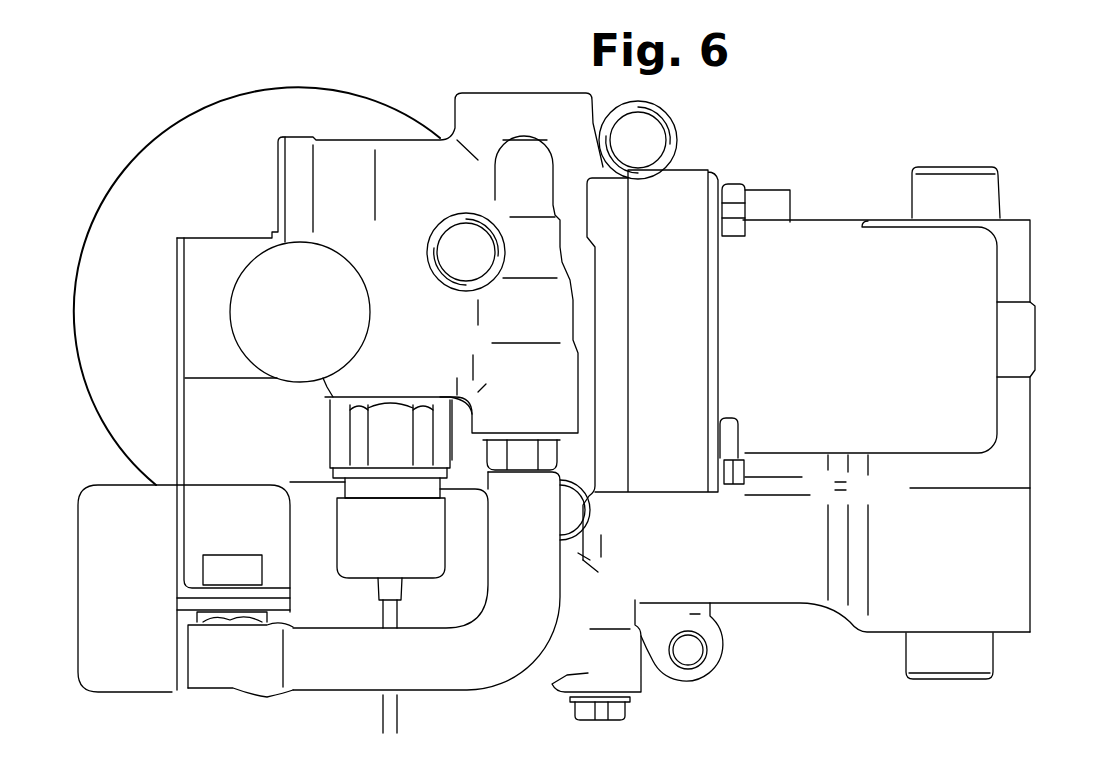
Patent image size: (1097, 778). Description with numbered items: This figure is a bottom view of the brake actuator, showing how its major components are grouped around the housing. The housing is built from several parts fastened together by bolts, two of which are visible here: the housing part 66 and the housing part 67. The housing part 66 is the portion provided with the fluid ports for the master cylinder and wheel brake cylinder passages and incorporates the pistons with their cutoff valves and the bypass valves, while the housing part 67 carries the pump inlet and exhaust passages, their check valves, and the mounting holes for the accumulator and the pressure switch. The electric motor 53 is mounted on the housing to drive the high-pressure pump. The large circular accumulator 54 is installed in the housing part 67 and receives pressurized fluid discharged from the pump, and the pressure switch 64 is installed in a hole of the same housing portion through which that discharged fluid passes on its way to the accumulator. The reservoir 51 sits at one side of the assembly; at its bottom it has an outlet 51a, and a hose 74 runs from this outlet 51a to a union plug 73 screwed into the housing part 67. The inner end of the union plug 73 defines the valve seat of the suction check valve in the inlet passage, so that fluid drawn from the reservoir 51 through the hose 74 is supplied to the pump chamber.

The reservoir 51 is at (112, 507).
The outlet 51a is at (178, 670).
The electric motor 53 is at (866, 250).
The accumulator 54 is at (121, 210).
The pressure switch 64 is at (410, 552).
The housing part 66 is at (985, 607).
The housing part 67 is at (437, 137).
The union plug 73 is at (527, 455).
The hose 74 is at (488, 643).